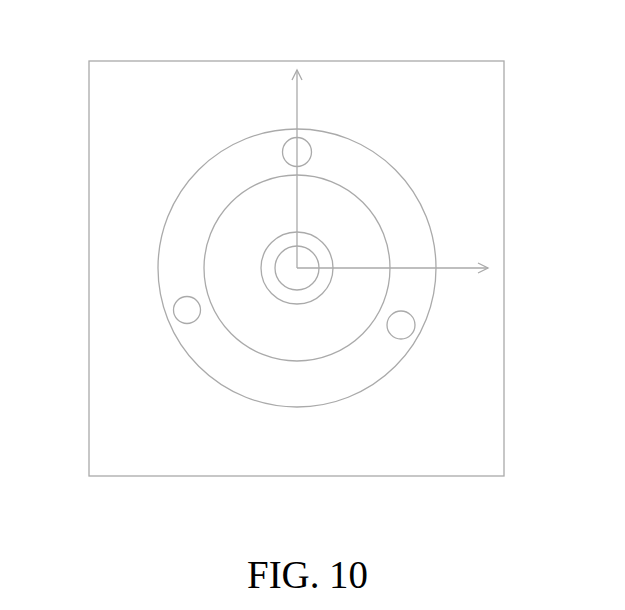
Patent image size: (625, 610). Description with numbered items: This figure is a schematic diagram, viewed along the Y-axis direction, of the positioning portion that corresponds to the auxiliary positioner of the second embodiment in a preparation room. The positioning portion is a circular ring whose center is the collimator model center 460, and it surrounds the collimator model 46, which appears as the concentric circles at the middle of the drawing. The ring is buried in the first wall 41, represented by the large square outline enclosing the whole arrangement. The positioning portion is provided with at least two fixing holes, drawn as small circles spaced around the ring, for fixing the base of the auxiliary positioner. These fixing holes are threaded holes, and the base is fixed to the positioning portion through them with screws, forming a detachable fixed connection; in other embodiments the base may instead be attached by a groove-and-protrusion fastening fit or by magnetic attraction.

The first wall 41 is at (367, 125).
The collimator model 46 is at (267, 262).
The collimator model center 460 is at (297, 268).